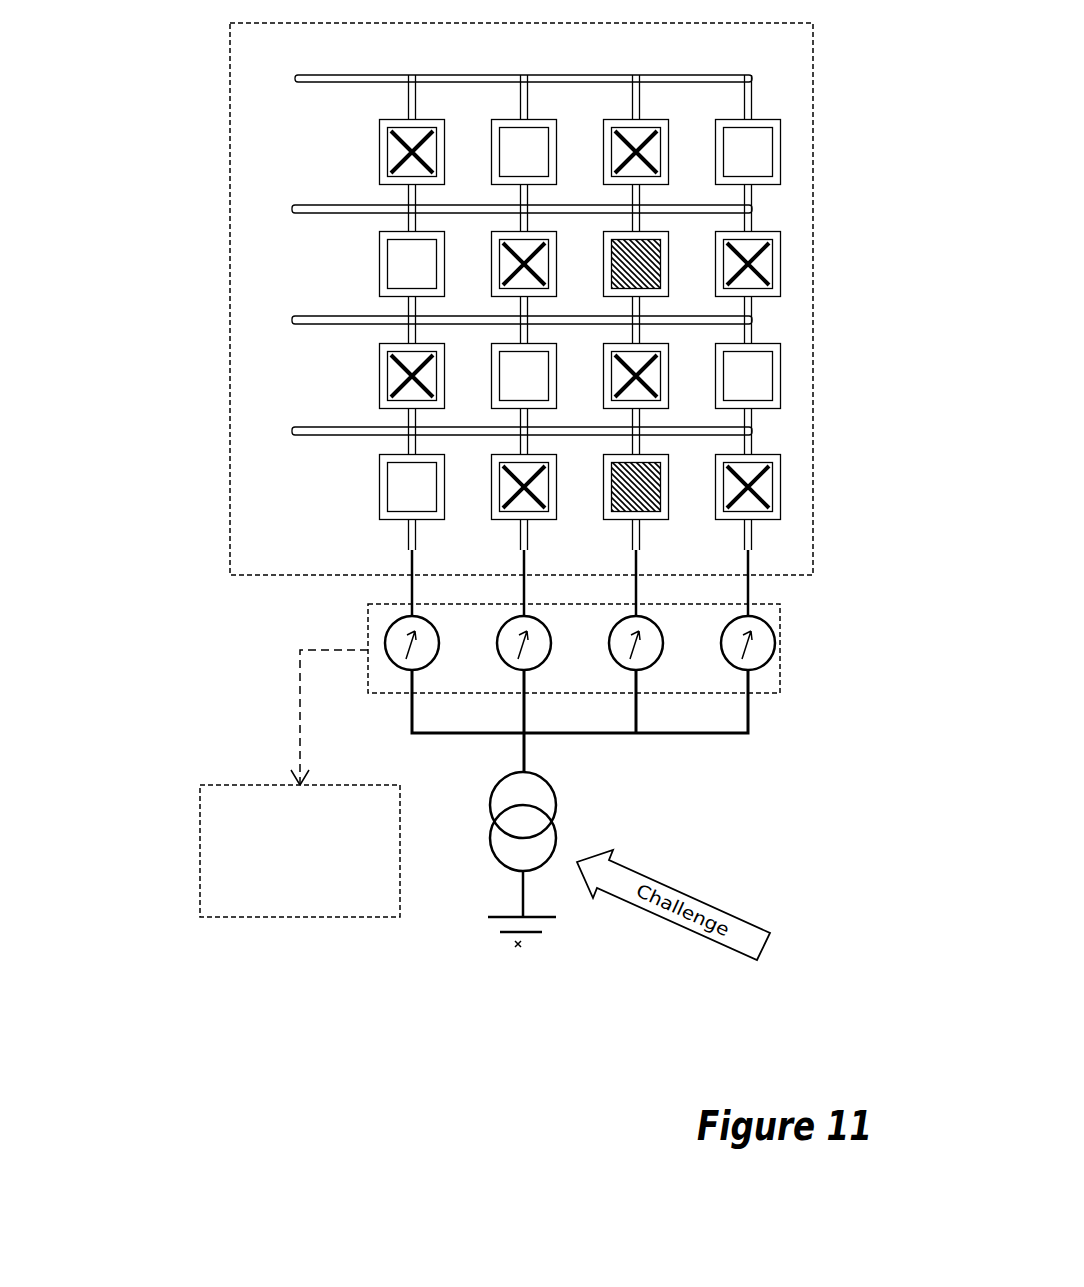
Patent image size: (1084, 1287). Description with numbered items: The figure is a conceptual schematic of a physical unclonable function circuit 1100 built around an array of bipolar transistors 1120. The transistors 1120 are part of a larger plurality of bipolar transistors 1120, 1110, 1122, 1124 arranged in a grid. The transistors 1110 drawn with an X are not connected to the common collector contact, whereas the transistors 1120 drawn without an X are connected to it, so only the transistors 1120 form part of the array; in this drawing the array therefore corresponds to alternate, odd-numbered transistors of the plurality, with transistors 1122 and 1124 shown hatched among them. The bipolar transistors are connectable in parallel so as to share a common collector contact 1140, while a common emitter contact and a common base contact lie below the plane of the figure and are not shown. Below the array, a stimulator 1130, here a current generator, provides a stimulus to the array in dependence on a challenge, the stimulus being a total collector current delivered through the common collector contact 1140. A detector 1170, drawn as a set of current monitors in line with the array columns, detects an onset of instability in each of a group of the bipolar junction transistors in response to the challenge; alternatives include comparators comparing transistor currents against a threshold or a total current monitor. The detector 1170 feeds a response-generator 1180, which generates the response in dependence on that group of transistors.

The physical unclonable function circuit 1100 is at (166, 148).
The bipolar transistor not connected to common collector contact 1110 is at (386, 155).
The bipolar transistor of the array 1120 is at (384, 242).
The bipolar transistor 1122 is at (664, 288).
The bipolar transistor 1124 is at (664, 454).
The stimulator 1130 is at (573, 810).
The common collector contact 1140 is at (527, 745).
The detector 1170 is at (781, 613).
The response-generator 1180 is at (300, 783).